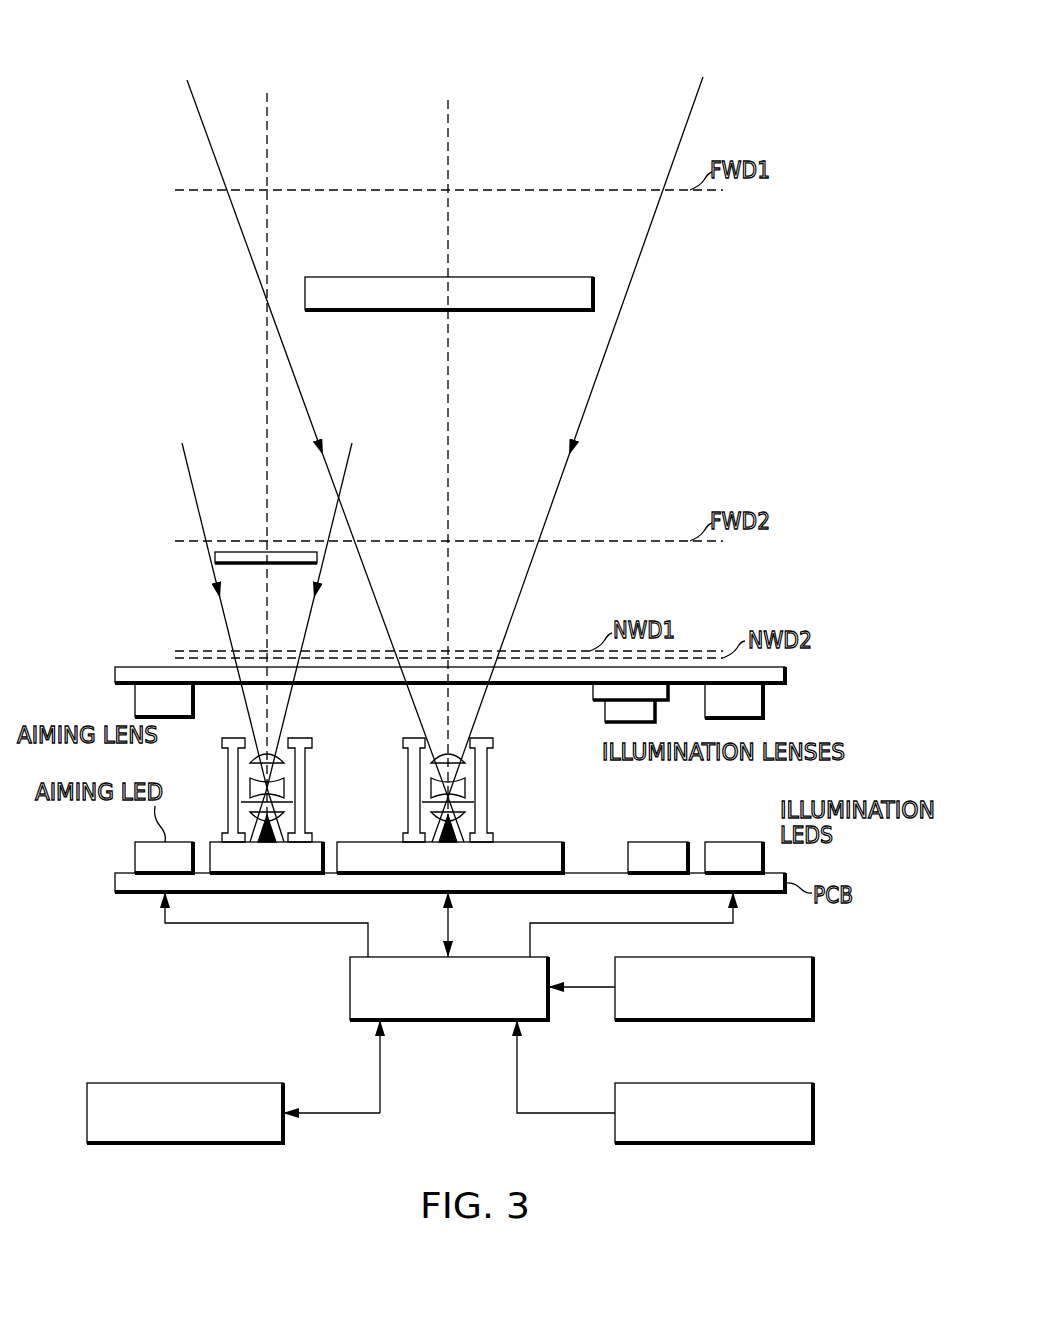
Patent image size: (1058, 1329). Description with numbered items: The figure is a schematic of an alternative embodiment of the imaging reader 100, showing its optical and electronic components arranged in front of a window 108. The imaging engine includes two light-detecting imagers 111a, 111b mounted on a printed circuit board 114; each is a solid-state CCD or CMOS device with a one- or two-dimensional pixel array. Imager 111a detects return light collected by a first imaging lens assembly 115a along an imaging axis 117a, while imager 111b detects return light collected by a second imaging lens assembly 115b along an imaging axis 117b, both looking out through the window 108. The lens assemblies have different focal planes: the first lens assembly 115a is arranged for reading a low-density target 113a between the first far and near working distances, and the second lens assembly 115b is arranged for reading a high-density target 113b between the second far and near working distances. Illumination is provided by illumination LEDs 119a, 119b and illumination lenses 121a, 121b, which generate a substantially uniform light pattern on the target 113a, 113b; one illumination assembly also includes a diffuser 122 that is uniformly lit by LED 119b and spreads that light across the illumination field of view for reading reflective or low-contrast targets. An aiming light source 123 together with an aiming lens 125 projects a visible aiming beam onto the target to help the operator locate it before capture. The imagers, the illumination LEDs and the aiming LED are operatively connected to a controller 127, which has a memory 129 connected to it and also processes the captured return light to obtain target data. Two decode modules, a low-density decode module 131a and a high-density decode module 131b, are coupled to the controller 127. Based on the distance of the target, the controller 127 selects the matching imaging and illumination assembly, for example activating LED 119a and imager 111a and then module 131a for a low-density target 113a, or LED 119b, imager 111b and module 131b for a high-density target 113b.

The imaging reader 100 is at (110, 43).
The window 108 is at (115, 674).
The imager 111a is at (535, 842).
The imager 111b is at (318, 842).
The target 113a is at (522, 312).
The target 113b is at (238, 552).
The printed circuit board 114 is at (115, 881).
The imaging lens assembly 115a is at (403, 791).
The imaging lens assembly 115b is at (222, 768).
The imaging axis 117a is at (448, 135).
The imaging axis 117b is at (267, 400).
The illumination LED 119a is at (711, 842).
The illumination LED 119b is at (653, 842).
The illumination lens 121a is at (763, 705).
The illumination lens 121b is at (606, 716).
The diffuser 122 is at (595, 689).
The aiming light source 123 is at (135, 851).
The aiming lens 125 is at (135, 700).
The controller 127 is at (454, 1022).
The memory 129 is at (87, 1113).
The low-density decode module 131a is at (813, 988).
The high-density decode module 131b is at (813, 1113).